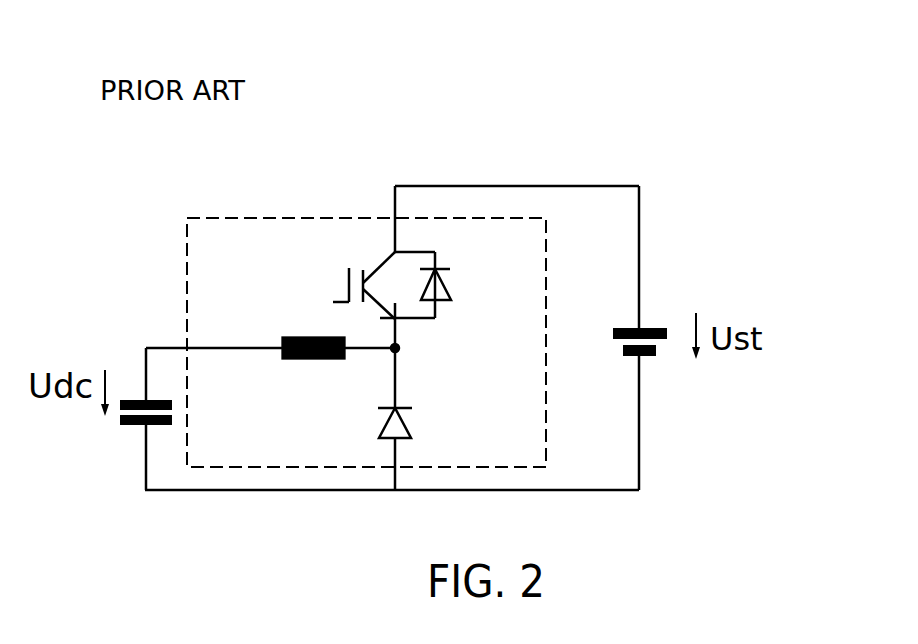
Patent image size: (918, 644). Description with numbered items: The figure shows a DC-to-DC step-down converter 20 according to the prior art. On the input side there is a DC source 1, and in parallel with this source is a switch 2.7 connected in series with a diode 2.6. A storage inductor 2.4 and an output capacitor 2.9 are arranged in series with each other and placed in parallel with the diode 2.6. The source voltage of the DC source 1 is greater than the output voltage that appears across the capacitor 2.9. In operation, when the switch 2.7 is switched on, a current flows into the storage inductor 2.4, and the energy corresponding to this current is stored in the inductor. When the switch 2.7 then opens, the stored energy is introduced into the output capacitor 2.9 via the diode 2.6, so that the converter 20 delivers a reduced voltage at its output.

The step-down converter 20 is at (350, 317).
The storage inductor 2.4 is at (291, 318).
The switch 2.7 is at (472, 261).
The diode 2.6 is at (430, 399).
The output capacitor 2.9 is at (116, 433).
The DC source 1 is at (668, 306).